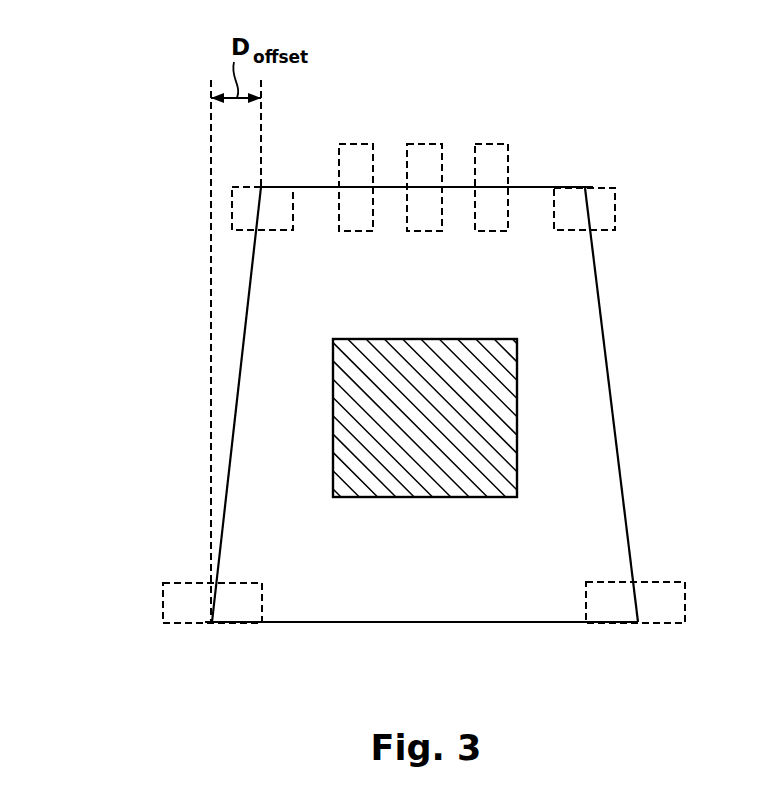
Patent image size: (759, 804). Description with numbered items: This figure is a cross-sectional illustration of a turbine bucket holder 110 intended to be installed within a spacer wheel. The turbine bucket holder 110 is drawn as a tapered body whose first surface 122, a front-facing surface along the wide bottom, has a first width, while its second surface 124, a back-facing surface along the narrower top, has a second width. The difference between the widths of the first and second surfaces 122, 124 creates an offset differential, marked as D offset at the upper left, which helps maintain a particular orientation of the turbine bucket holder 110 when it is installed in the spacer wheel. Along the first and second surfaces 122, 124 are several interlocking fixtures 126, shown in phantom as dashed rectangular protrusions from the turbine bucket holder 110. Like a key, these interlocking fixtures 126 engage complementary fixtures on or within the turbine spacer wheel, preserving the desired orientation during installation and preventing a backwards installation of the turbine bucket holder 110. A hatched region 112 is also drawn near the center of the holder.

The turbine bucket holder 110 is at (593, 465).
The active region 112 is at (517, 362).
The first surface 122 is at (422, 623).
The second surface 124 is at (313, 187).
The interlocking fixtures 126 is at (232, 208).